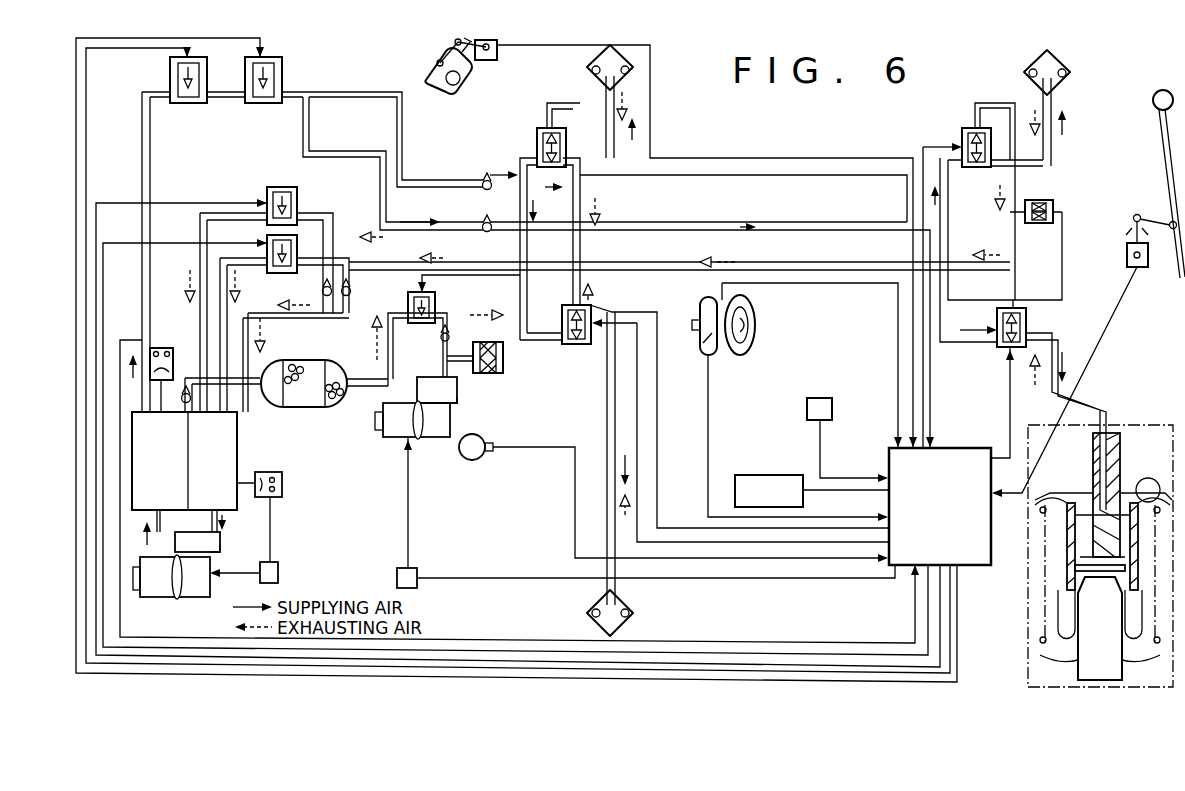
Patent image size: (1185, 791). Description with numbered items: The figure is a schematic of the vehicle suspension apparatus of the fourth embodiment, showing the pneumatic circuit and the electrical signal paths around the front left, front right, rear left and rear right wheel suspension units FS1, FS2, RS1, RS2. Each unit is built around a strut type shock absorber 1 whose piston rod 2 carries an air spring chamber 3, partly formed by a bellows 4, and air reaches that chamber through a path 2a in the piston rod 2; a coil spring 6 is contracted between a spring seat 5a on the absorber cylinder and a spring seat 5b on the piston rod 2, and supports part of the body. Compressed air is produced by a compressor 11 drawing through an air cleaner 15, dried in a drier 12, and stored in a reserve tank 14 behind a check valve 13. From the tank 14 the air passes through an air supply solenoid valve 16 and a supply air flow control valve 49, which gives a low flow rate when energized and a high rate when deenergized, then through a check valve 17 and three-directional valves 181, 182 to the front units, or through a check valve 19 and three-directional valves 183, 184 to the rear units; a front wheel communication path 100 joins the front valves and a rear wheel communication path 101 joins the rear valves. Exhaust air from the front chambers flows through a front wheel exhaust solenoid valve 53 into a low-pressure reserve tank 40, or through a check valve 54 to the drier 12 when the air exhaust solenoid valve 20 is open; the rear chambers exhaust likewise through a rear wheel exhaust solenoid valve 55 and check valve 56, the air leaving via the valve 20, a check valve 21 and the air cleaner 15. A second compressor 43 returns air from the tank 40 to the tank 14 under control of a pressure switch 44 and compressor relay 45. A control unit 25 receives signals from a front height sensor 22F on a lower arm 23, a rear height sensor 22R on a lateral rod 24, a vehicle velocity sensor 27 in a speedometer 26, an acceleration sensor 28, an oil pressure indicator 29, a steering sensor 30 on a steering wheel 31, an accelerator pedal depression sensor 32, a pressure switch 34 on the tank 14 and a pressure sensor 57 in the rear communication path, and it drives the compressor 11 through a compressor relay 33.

The strut type shock absorber 1 is at (1078, 672).
The piston rod 2 is at (1092, 558).
The path 2a is at (1118, 442).
The air spring chamber 3 is at (1078, 570).
The bellows 4 is at (1058, 605).
The spring seat 5a is at (1040, 658).
The spring seat 5b is at (1150, 476).
The coil spring 6 is at (1040, 530).
The compressor 11 is at (447, 440).
The drier 12 is at (318, 408).
The check valve 13 is at (195, 395).
The reserve tank 14 is at (136, 522).
The air cleaner 15 is at (497, 375).
The air supply solenoid valve 16 is at (283, 78).
The check valve 17 is at (476, 172).
The check valve 19 is at (478, 218).
The air exhaust solenoid valve 20 is at (444, 288).
The check valve 21 is at (440, 338).
The front height sensor 22F is at (486, 60).
The rear height sensor 22R is at (1126, 258).
The lower arm 23 is at (430, 68).
The lateral rod 24 is at (1164, 195).
The control unit 25 is at (962, 448).
The speedometer 26 is at (700, 312).
The vehicle velocity sensor 27 is at (698, 350).
The acceleration (G) sensor 28 is at (832, 408).
The indicator (OIL) 29 is at (762, 475).
The steering sensor 30 is at (730, 348).
The steering wheel 31 is at (758, 292).
The accelerator pedal depression sensor 32 is at (470, 460).
The compressor relay 33 is at (420, 565).
The pressure switch 34 is at (172, 345).
The low-pressure reserve tank 40 is at (238, 470).
The compressor 43 is at (198, 600).
The pressure switch 44 is at (292, 470).
The compressor relay 45 is at (279, 570).
The supply air flow control valve 49 is at (210, 93).
The front wheel exhaust solenoid valve 53 is at (298, 205).
The check valve 54 is at (322, 291).
The rear wheel exhaust solenoid valve 55 is at (300, 245).
The check valve 56 is at (351, 291).
The pressure sensor 57 is at (1046, 186).
The front wheel communication path 100 is at (528, 212).
The rear wheel communication path 101 is at (950, 220).
The three-directional valve 181 is at (580, 345).
The three-directional valve 182 is at (538, 128).
The three-directional valve 183 is at (1028, 322).
The three-directional valve 184 is at (962, 128).
The front left wheel suspension unit FS1 is at (630, 605).
The front right wheel suspension unit FS2 is at (590, 70).
The rear left wheel suspension unit RS1 is at (1162, 425).
The rear right wheel suspension unit RS2 is at (1068, 64).